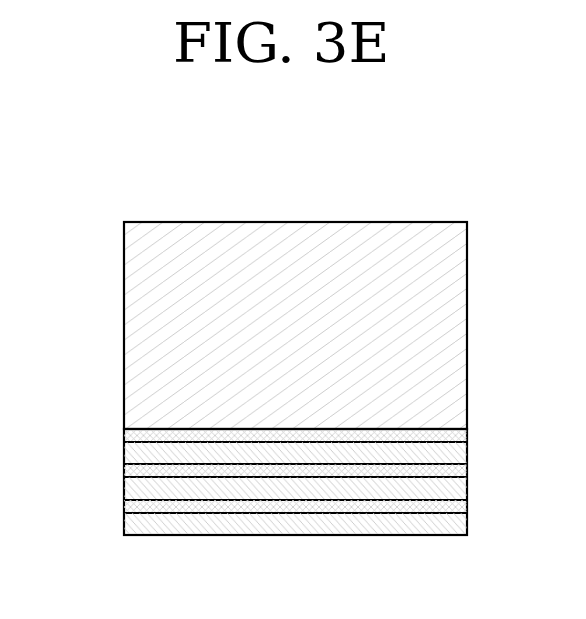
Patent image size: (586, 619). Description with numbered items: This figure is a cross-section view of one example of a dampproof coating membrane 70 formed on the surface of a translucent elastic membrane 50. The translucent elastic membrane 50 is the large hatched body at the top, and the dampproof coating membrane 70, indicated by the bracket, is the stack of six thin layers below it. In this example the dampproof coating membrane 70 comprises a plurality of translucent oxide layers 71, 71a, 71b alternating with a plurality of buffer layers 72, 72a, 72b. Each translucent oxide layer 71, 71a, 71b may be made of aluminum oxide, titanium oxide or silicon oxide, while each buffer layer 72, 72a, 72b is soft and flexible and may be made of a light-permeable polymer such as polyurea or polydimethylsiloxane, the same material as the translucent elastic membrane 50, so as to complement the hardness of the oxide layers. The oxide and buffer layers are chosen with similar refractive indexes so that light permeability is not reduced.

The translucent elastic membrane 50 is at (467, 322).
The dampproof coating membrane 70 is at (55, 386).
The translucent oxide layer 71 is at (124, 422).
The buffer layer 72 is at (124, 443).
The translucent oxide layer 71a is at (124, 467).
The buffer layer 72a is at (124, 487).
The translucent oxide layer 71b is at (124, 507).
The buffer layer 72b is at (124, 532).